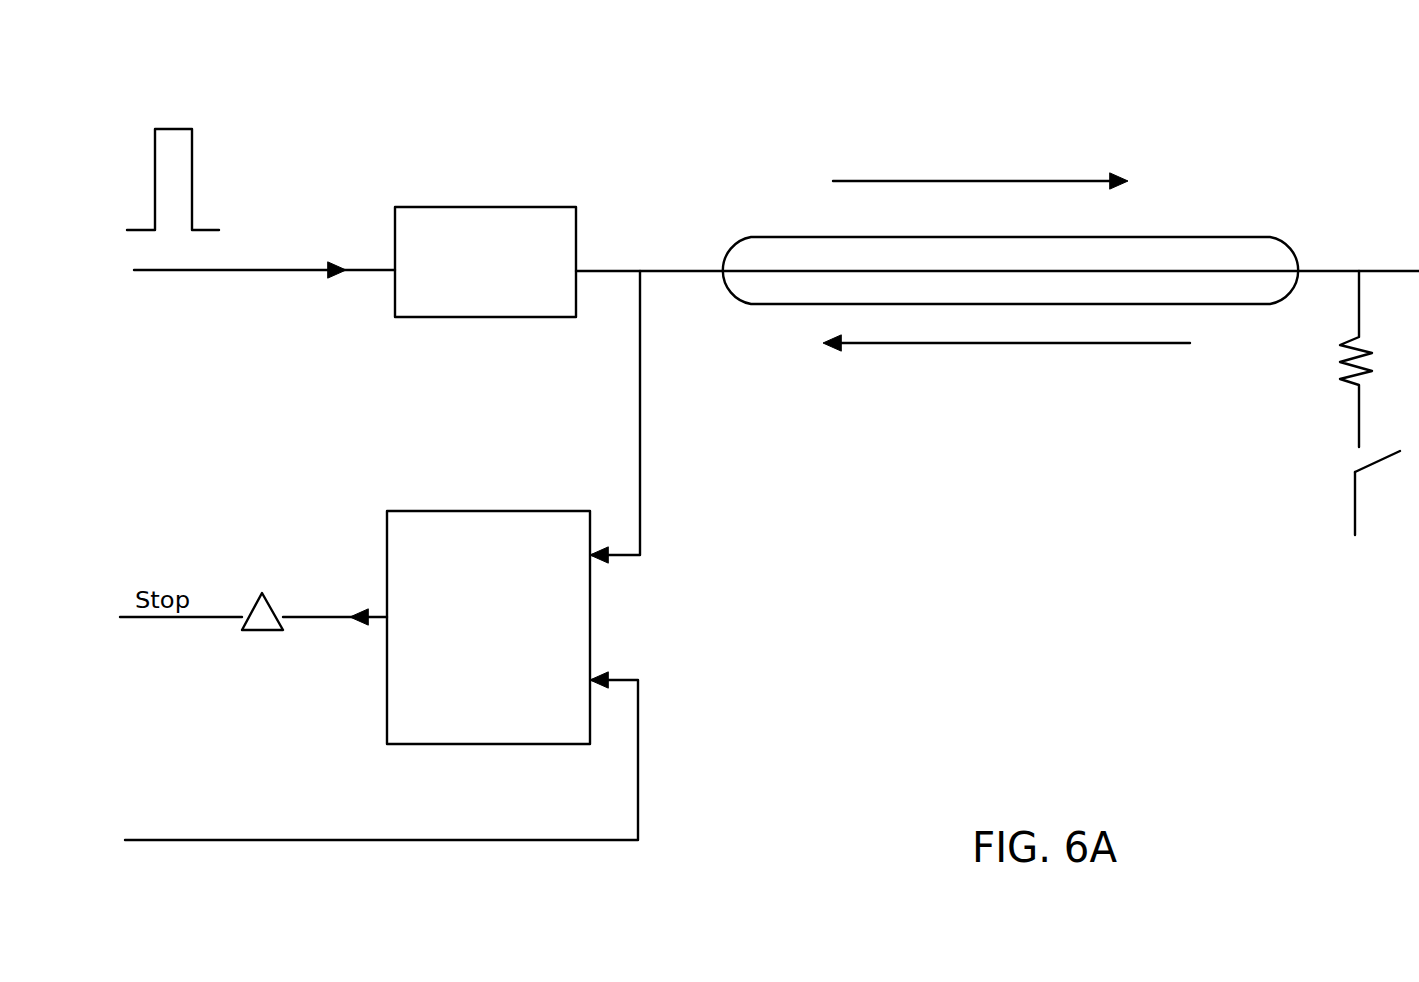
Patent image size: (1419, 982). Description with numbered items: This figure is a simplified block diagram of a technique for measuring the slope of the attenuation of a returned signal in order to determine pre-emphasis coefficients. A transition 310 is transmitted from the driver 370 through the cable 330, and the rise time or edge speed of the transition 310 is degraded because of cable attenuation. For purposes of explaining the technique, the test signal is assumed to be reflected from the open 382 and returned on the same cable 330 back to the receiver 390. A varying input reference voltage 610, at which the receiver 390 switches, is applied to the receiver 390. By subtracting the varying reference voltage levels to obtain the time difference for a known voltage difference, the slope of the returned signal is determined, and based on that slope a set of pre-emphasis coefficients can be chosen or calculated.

The transition 310 is at (186, 128).
The driver 370 is at (469, 205).
The cable 330 is at (681, 270).
The open 382 is at (1352, 457).
The receiver 390 is at (387, 558).
The input reference voltage 610 is at (640, 710).